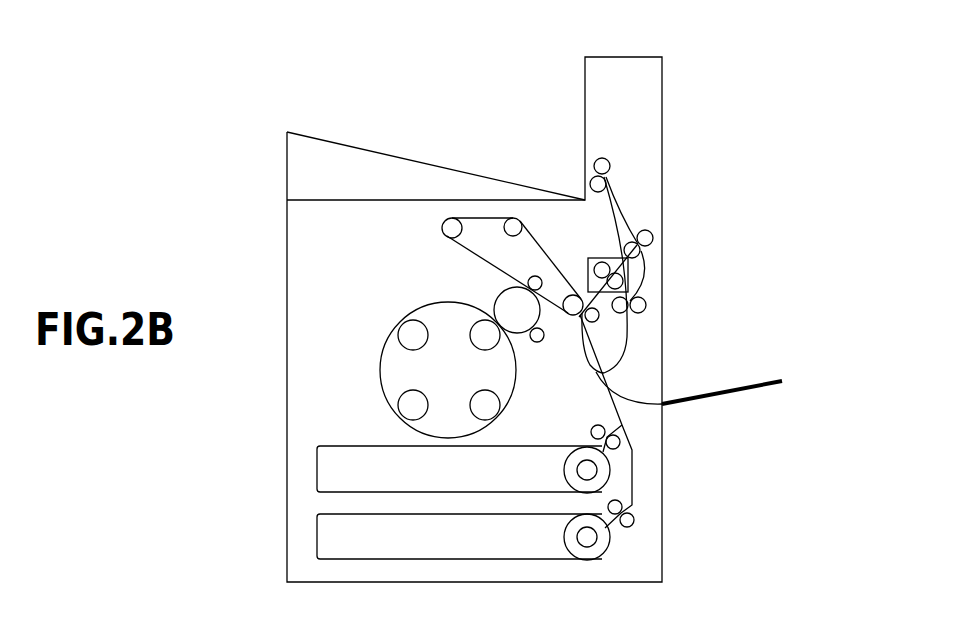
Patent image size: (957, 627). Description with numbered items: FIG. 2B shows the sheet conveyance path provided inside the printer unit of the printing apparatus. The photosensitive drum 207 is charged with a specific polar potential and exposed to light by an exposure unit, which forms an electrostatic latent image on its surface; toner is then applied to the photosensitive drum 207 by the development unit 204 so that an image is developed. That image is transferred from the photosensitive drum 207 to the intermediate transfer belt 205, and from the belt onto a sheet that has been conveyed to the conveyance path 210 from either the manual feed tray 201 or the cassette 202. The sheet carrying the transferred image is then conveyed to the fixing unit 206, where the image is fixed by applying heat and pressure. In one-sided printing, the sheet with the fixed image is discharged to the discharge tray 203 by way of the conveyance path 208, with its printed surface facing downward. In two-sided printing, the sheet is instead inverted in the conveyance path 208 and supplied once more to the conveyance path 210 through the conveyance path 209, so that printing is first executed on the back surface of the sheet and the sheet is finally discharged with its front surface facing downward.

The manual feed tray 201 is at (742, 385).
The cassette 202 is at (325, 472).
The discharge tray 203 is at (492, 181).
The development unit 204 is at (382, 372).
The intermediate transfer belt 205 is at (442, 228).
The fixing unit 206 is at (588, 268).
The photosensitive drum 207 is at (499, 293).
The conveyance path 208 is at (615, 196).
The conveyance path 209 is at (632, 335).
The conveyance path 210 is at (582, 337).